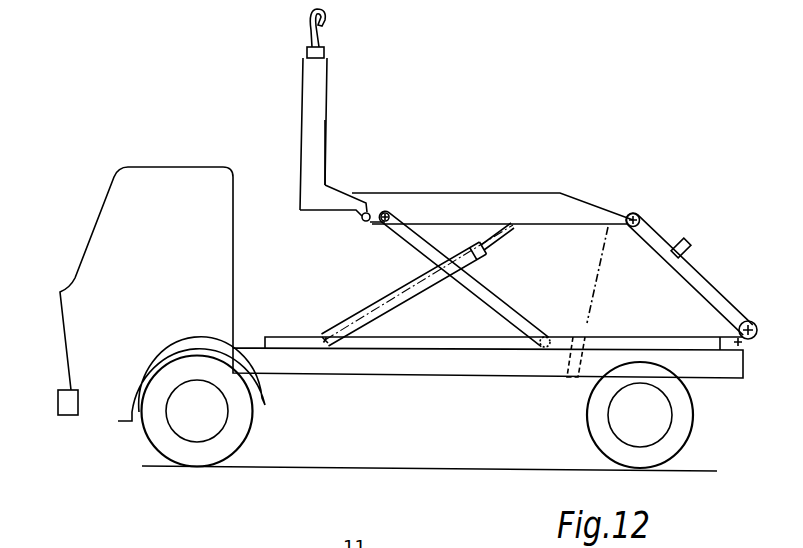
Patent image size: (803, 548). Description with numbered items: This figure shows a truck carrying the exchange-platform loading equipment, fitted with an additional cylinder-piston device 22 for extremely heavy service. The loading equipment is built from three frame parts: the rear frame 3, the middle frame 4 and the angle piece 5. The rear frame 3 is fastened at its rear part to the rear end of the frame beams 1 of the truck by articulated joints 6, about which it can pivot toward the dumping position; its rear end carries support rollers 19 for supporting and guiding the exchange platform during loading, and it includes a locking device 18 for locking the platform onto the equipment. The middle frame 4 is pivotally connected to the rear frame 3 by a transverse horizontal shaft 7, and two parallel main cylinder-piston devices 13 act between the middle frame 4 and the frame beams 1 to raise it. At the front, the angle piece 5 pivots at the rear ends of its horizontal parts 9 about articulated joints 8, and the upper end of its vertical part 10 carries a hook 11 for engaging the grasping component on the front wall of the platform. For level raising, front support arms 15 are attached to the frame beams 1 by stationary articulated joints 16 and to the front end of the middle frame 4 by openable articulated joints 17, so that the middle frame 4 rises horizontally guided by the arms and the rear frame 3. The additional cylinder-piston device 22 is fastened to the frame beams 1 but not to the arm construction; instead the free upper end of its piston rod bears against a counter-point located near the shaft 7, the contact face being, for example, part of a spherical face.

The frame beams 1 is at (413, 374).
The rear frame 3 is at (728, 305).
The middle frame 4 is at (488, 197).
The angle piece 5 is at (327, 139).
The articulated joints 6 is at (748, 346).
The transverse horizontal shaft 7 is at (630, 232).
The articulated joints 8 is at (363, 222).
The horizontal parts 9 is at (323, 212).
The vertical part 10 is at (303, 106).
The hook 11 is at (325, 22).
The main cylinder-piston devices 13 is at (418, 292).
The front support arms 15 is at (492, 298).
The articulated joints 16 is at (541, 350).
The articulated joints 17 is at (385, 224).
The locking device 18 is at (687, 248).
The support rollers 19 is at (757, 331).
The additional cylinder-piston device 22 is at (581, 333).